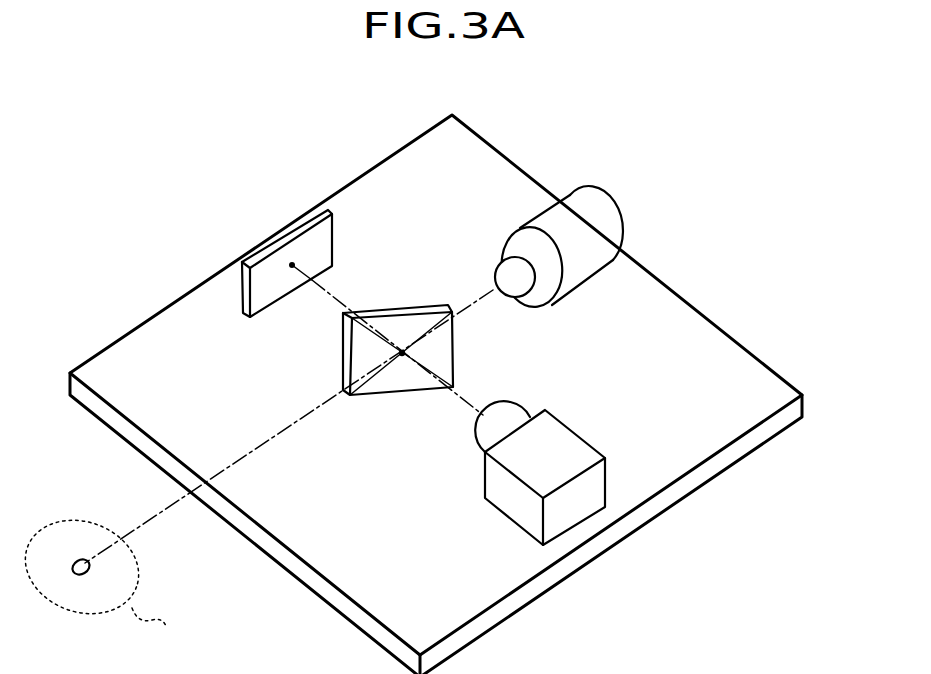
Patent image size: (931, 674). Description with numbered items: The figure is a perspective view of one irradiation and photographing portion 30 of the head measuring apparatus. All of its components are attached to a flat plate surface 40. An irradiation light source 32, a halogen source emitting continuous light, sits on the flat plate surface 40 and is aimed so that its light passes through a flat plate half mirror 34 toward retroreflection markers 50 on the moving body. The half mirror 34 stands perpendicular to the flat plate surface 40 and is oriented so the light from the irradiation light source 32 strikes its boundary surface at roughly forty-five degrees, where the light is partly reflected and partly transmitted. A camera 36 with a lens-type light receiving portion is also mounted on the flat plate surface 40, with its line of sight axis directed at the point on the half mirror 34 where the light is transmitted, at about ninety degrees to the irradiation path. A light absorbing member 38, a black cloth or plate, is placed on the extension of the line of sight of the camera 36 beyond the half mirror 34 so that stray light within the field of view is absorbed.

The irradiation and photographing portion 30 is at (380, 348).
The irradiation light source 32 is at (607, 232).
The half mirror 34 is at (447, 360).
The camera 36 is at (562, 437).
The light absorbing member 38 is at (318, 248).
The flat plate surface 40 is at (692, 321).
The retroreflection markers 50 is at (88, 568).